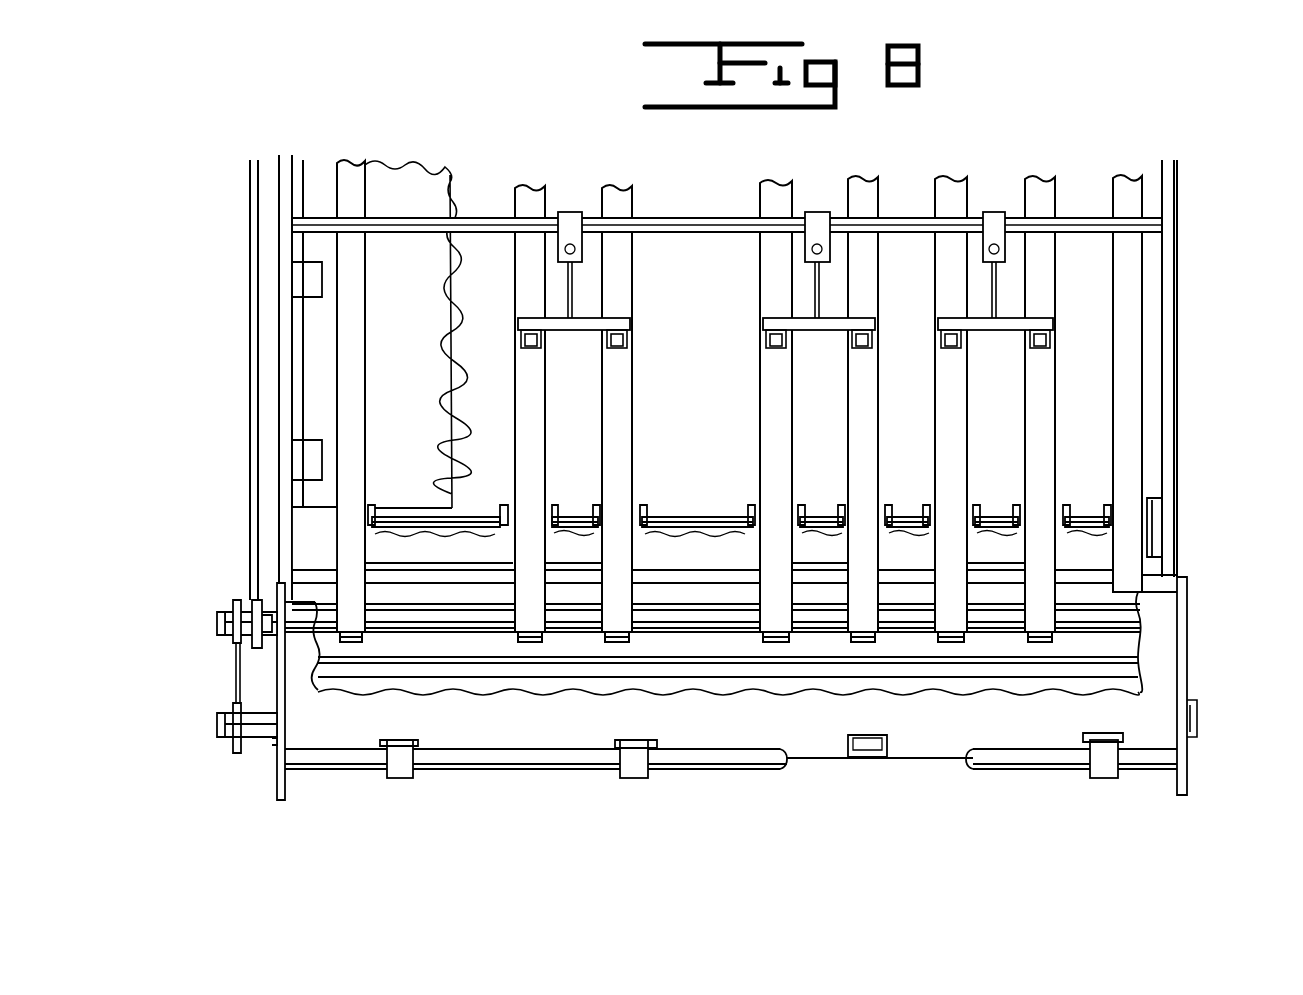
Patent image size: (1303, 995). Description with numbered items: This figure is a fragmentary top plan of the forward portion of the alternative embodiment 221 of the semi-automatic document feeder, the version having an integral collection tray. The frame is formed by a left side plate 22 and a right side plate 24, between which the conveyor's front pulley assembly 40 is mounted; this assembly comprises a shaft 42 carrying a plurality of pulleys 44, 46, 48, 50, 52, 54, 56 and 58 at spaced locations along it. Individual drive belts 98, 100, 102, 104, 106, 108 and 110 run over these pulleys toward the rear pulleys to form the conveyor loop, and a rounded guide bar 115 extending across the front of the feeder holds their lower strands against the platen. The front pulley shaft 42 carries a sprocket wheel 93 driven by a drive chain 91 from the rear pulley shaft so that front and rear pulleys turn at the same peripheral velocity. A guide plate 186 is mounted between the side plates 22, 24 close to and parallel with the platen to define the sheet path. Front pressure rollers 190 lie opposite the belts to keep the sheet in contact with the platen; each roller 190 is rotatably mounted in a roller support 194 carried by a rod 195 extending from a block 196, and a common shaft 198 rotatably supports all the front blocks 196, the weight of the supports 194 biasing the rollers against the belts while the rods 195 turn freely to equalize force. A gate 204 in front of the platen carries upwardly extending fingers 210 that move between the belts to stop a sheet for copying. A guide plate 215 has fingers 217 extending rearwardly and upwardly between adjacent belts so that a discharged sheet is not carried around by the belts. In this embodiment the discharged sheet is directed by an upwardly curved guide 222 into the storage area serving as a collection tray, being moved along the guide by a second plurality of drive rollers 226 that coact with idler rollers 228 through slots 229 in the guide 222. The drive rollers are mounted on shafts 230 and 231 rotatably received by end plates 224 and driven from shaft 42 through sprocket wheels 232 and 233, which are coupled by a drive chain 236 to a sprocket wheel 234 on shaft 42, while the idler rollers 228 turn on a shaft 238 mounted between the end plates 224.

The left side plate 22 is at (282, 398).
The right side plate 24 is at (1185, 342).
The front pulley assembly 40 is at (450, 636).
The shaft 42 is at (487, 642).
The pulley 44 is at (1150, 580).
The pulley 46 is at (1054, 602).
The pulley 48 is at (966, 602).
The pulley 50 is at (878, 602).
The pulley 52 is at (792, 602).
The pulley 54 is at (638, 602).
The pulley 56 is at (545, 602).
The pulley 58 is at (370, 600).
The drive chain 91 is at (256, 470).
The sprocket wheel 93 is at (260, 608).
The drive belt 98 is at (1140, 382).
The drive belt 100 is at (1052, 382).
The drive belt 102 is at (955, 388).
The drive belt 104 is at (866, 392).
The drive belt 106 is at (772, 392).
The drive belt 108 is at (622, 384).
The drive belt 110 is at (533, 392).
The guide bar 115 is at (712, 638).
The guide plate 186 is at (300, 340).
The front pressure roller 190 is at (948, 348).
The roller support 194 is at (1040, 320).
The rod 195 is at (996, 290).
The block 196 is at (995, 212).
The common shaft 198 is at (315, 210).
The gate 204 is at (1100, 500).
The finger 210 is at (1082, 516).
The guide plate 215 is at (1162, 490).
The finger 217 is at (1066, 503).
The alternative embodiment 221 is at (1208, 413).
The upwardly curved guide 222 is at (362, 686).
The end plate 224 is at (276, 790).
The drive roller 226 is at (876, 760).
The idler roller 228 is at (1103, 780).
The slot 229 is at (633, 740).
The shaft 230 is at (233, 695).
The shaft 231 is at (262, 760).
The sprocket wheel 232 is at (226, 713).
The sprocket wheel 233 is at (222, 736).
The sprocket wheel 234 is at (230, 610).
The drive chain 236 is at (232, 640).
The shaft 238 is at (568, 772).